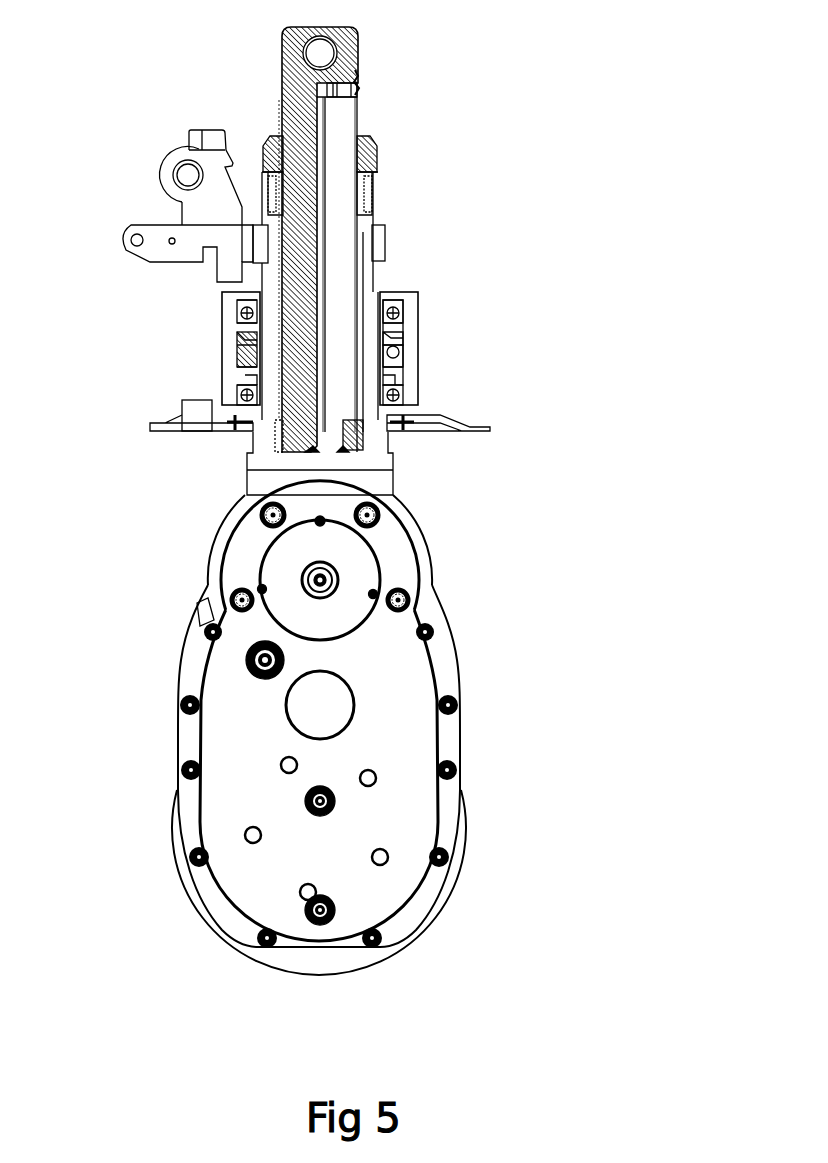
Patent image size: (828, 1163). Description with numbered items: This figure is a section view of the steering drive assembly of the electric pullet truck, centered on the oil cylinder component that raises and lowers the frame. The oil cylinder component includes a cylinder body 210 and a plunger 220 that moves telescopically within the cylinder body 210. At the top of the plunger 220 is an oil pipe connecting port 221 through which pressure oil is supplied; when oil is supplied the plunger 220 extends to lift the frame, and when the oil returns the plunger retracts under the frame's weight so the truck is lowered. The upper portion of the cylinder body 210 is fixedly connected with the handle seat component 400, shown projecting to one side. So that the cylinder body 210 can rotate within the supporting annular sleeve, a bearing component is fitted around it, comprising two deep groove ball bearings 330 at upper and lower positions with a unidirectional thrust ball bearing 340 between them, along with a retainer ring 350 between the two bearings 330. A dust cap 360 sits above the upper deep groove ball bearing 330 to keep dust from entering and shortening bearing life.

The cylinder body 210 is at (360, 462).
The plunger 220 is at (355, 53).
The oil pipe connecting port 221 is at (346, 90).
The deep groove ball bearings 330 is at (397, 313).
The unidirectional thrust ball bearing 340 is at (393, 352).
The spacer sleeve 350 is at (393, 332).
The dust cap 360 is at (397, 297).
The handle seat component 400 is at (152, 248).